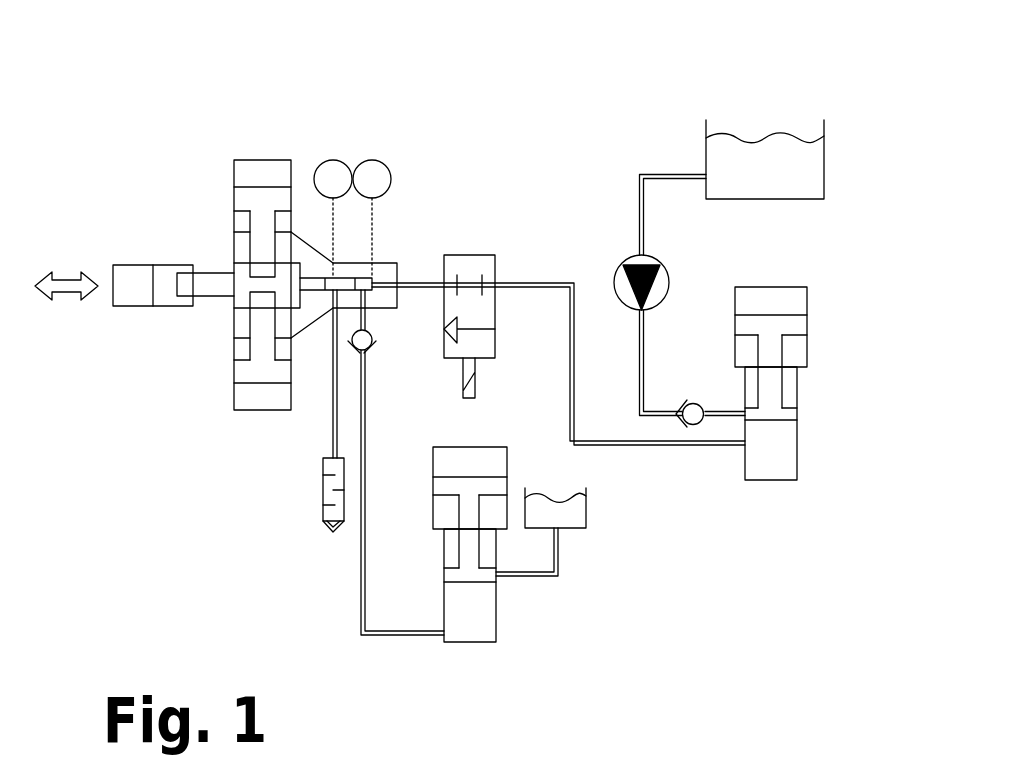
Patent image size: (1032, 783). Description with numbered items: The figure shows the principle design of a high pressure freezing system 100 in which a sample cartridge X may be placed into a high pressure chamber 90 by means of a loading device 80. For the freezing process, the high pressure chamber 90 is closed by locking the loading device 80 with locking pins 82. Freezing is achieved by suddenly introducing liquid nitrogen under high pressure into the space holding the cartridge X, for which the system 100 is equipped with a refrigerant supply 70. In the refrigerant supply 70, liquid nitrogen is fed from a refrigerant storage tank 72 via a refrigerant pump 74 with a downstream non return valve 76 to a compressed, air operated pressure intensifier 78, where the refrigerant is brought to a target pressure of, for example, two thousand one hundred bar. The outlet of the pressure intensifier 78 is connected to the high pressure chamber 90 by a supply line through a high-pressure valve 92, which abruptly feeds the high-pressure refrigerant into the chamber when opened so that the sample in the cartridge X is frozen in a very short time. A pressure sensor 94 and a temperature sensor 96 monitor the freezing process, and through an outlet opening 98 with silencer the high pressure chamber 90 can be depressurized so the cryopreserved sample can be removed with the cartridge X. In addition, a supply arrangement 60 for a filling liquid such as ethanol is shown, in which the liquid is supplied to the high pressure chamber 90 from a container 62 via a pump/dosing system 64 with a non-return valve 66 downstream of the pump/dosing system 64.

The supply arrangement 60 is at (538, 603).
The container 62 is at (573, 518).
The pump/dosing system 64 is at (472, 644).
The non-return valve 66 is at (370, 350).
The refrigerant supply 70 is at (635, 142).
The refrigerant storage tank 72 is at (810, 172).
The refrigerant pump 74 is at (668, 268).
The non return valve 76 is at (702, 423).
The pressure intensifier 78 is at (800, 308).
The loading device 80 is at (207, 298).
The locking pins 82 is at (245, 200).
The high pressure chamber 90 is at (390, 263).
The high-pressure valve 92 is at (480, 255).
The pressure sensor 94 is at (373, 160).
The temperature sensor 96 is at (333, 160).
The outlet opening 98 is at (323, 488).
The high pressure freezing system 100 is at (747, 83).
The sample cartridge X is at (353, 292).